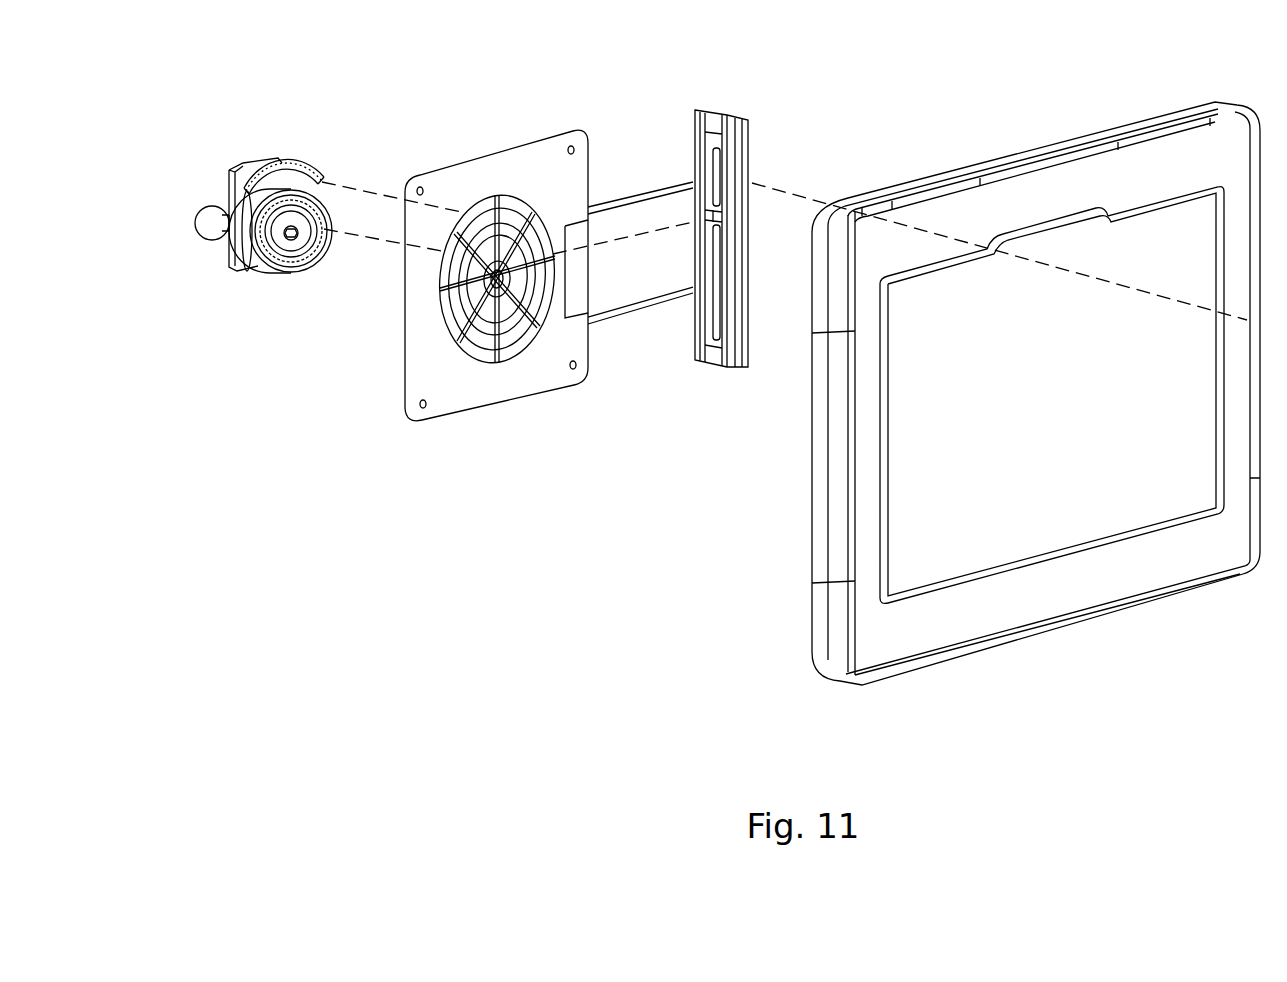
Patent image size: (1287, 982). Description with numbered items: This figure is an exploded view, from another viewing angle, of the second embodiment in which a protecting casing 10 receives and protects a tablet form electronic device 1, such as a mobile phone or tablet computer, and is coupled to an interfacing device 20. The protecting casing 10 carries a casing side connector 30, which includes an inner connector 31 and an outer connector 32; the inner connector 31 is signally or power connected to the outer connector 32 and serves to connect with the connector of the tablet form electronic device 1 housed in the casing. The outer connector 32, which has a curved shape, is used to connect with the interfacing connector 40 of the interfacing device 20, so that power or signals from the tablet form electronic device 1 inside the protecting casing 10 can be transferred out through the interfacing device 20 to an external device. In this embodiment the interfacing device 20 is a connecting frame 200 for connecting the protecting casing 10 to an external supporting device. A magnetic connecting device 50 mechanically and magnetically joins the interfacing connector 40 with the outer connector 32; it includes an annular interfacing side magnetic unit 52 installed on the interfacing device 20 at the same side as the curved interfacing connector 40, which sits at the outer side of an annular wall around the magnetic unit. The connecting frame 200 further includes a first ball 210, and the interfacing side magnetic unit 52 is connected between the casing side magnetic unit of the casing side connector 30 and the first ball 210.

The tablet form electronic device 1 is at (1057, 273).
The protecting casing 10 is at (1148, 118).
The interfacing device 20 is at (236, 161).
The casing side connector 30 is at (515, 138).
The inner connector 31 is at (713, 178).
The outer connector 32 is at (485, 217).
The interfacing connector 40 is at (270, 172).
The magnetic connecting device 50 is at (285, 252).
The interfacing side magnetic unit 52 is at (294, 252).
The connecting frame 200 is at (262, 196).
The first ball 210 is at (202, 236).